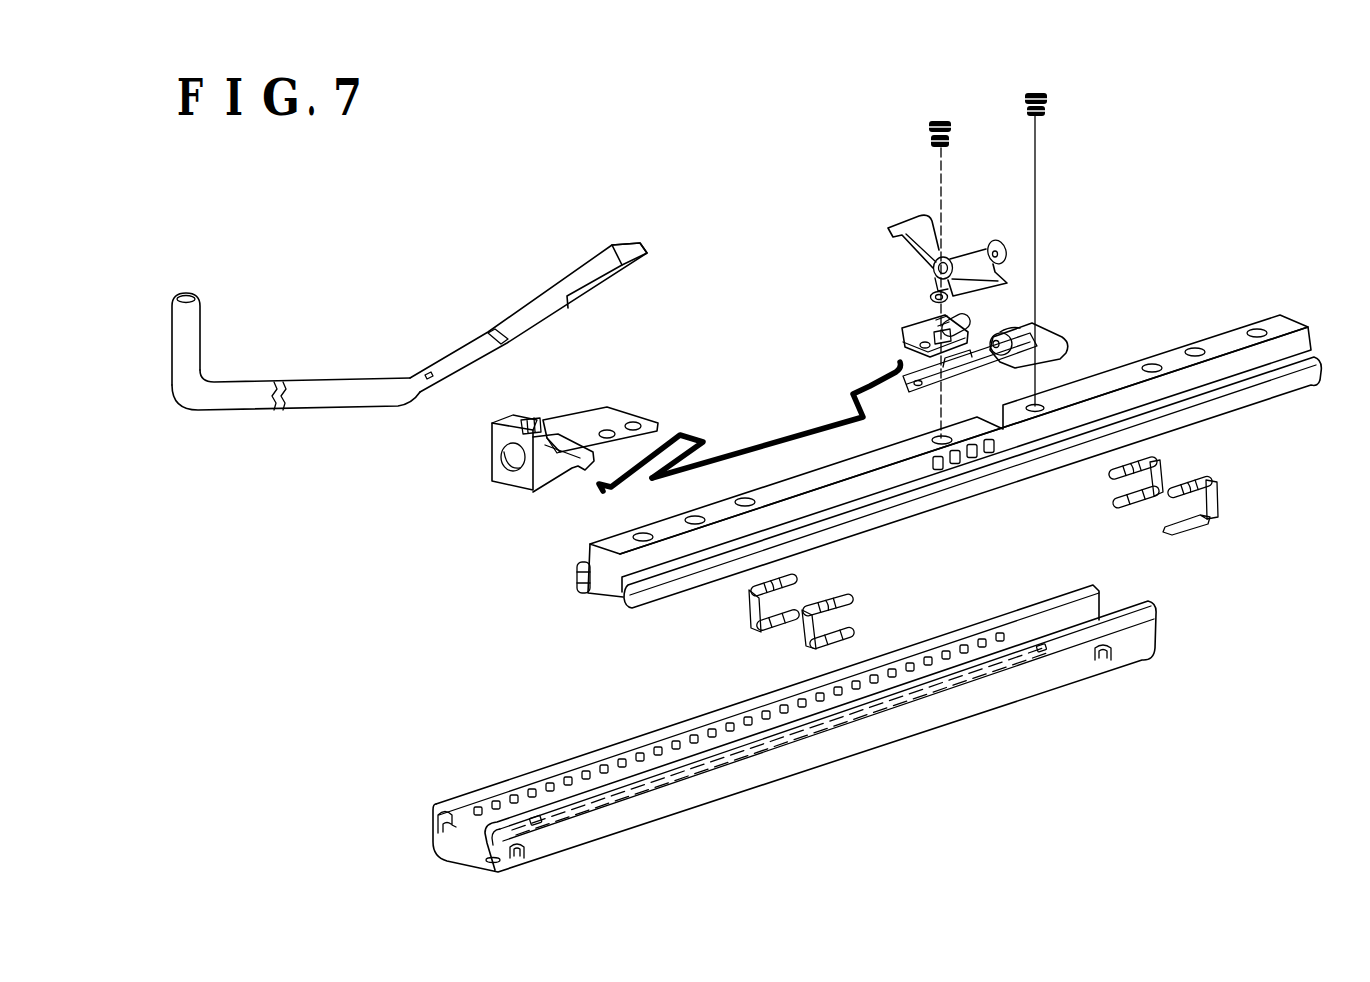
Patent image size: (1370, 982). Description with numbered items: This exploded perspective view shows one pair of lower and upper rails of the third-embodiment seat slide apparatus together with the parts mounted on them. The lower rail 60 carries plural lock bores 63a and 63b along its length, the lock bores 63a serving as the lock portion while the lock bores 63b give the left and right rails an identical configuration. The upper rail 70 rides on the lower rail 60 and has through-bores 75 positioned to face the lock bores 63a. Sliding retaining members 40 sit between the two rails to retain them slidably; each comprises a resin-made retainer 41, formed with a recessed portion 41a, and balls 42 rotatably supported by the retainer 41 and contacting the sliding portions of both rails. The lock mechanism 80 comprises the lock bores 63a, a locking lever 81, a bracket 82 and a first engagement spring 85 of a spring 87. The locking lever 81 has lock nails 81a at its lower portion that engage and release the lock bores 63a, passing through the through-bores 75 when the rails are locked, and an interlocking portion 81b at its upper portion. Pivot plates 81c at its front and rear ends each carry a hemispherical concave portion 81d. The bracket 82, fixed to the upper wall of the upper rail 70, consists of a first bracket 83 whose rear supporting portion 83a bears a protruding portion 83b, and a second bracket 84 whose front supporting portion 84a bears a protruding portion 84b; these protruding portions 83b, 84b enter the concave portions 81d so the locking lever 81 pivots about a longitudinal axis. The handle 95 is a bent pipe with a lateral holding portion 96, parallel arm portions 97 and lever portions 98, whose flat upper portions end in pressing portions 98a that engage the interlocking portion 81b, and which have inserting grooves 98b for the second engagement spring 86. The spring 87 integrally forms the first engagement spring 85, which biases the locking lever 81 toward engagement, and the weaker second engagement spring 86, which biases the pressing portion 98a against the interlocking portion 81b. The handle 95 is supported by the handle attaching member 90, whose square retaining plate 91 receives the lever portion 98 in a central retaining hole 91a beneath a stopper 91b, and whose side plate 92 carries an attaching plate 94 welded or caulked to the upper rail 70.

The sliding retaining member 40 is at (1228, 502).
The retainer 41 is at (1192, 517).
The recessed portion 41a is at (1168, 518).
The balls 42 is at (1202, 482).
The lower rail 60 is at (774, 733).
The lock bores 63a is at (568, 781).
The lock bores 63b is at (552, 826).
The upper rail 70 is at (899, 467).
The through-bores 75 is at (958, 470).
The lock mechanism 80 is at (975, 262).
The locking lever 81 is at (913, 218).
The lock nails 81a is at (932, 292).
The interlocking portion 81b is at (914, 224).
The pivot plates 81c is at (941, 256).
The concave portion 81d is at (936, 263).
The bracket 82 is at (1023, 319).
The first bracket 83 is at (1057, 330).
The supporting portion 83a is at (1020, 330).
The protruding portion 83b is at (1004, 334).
The second bracket 84 is at (941, 319).
The supporting portion 84a is at (936, 321).
The protruding portion 84b is at (972, 319).
The first engagement spring 85 is at (862, 390).
The second engagement spring 86 is at (685, 432).
The spring 87 is at (750, 403).
The handle attaching member 90 is at (512, 460).
The retaining plate 91 is at (504, 449).
The retaining hole 91a is at (513, 465).
The stopper 91b is at (537, 419).
The side plate 92 is at (544, 472).
The attaching plate 94 is at (620, 422).
The handle 95 is at (409, 333).
The holding portion 96 is at (192, 337).
The arm portions 97 is at (332, 400).
The lever portions 98 is at (528, 294).
The pressing portion 98a is at (625, 252).
The inserting groove 98b is at (464, 314).